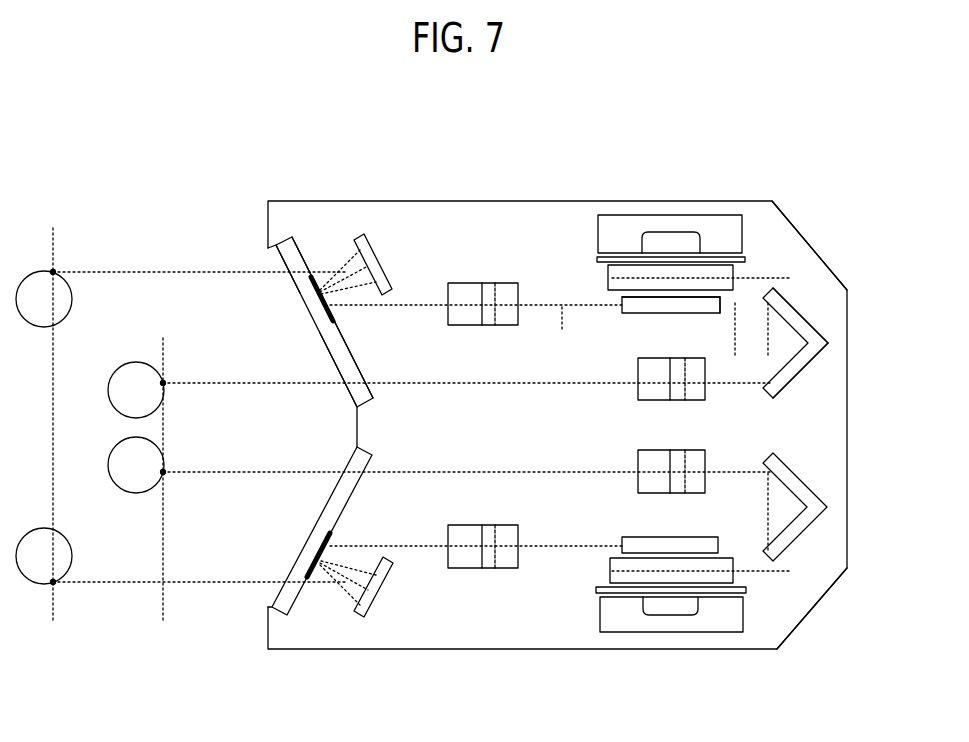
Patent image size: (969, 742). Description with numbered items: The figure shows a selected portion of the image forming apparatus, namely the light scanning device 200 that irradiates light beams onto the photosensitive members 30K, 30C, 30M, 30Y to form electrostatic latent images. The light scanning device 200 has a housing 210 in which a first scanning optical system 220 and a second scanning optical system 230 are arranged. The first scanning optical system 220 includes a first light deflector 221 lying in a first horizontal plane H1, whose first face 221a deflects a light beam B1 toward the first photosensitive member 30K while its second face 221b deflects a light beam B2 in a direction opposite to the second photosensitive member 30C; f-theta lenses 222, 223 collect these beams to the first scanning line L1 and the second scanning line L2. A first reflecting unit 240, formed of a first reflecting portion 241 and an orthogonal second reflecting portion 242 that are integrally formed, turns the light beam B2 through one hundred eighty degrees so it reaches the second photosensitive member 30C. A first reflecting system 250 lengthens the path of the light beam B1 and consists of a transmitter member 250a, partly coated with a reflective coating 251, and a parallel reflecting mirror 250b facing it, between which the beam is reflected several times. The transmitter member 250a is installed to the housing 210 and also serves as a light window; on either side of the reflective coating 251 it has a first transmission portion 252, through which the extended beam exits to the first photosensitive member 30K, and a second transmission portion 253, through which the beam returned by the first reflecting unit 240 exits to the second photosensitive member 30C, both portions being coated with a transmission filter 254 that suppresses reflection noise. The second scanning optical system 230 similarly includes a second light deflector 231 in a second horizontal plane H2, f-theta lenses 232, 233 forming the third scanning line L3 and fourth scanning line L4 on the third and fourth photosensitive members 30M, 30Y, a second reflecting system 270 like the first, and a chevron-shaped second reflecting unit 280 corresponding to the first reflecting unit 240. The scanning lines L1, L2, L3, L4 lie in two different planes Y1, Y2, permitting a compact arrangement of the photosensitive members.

The light scanning device 200 is at (553, 404).
The housing 210 is at (452, 201).
The first scanning optical system 220 is at (805, 252).
The first light deflector 221 is at (668, 219).
The first face 221a is at (620, 305).
The second face 221b is at (723, 302).
The f-theta lens 222 is at (487, 283).
The f-theta lens 223 is at (637, 392).
The second scanning optical system 230 is at (812, 600).
The second light deflector 231 is at (713, 645).
The f-theta lens 232 is at (637, 480).
The f-theta lens 233 is at (488, 568).
The first reflecting unit 240 is at (831, 327).
The first reflecting portion 241 is at (798, 313).
The second reflecting portion 242 is at (800, 371).
The first reflecting system 250 is at (323, 295).
The transmitter member 250a is at (302, 300).
The reflecting mirror 250b is at (375, 245).
The reflective coating 251 is at (316, 280).
The first transmission portion 252 is at (277, 256).
The second transmission portion 253 is at (337, 366).
The transmission filter 254 is at (290, 237).
The second reflecting system 270 is at (320, 621).
The second reflecting mirror (chevron) 280 is at (833, 521).
The first photosensitive member 30K is at (72, 300).
The second photosensitive member 30C is at (118, 372).
The third photosensitive member 30M is at (122, 487).
The fourth photosensitive member 30Y is at (72, 557).
The first scanning line L1 is at (53, 272).
The second scanning line L2 is at (163, 383).
The third scanning line L3 is at (163, 472).
The fourth scanning line L4 is at (53, 582).
The first plane Y1 is at (51, 442).
The second plane Y2 is at (163, 497).
The first horizontal plane H1 is at (715, 273).
The second horizontal plane H2 is at (715, 569).
The light beam B1 is at (565, 331).
The light beam B2 is at (739, 330).